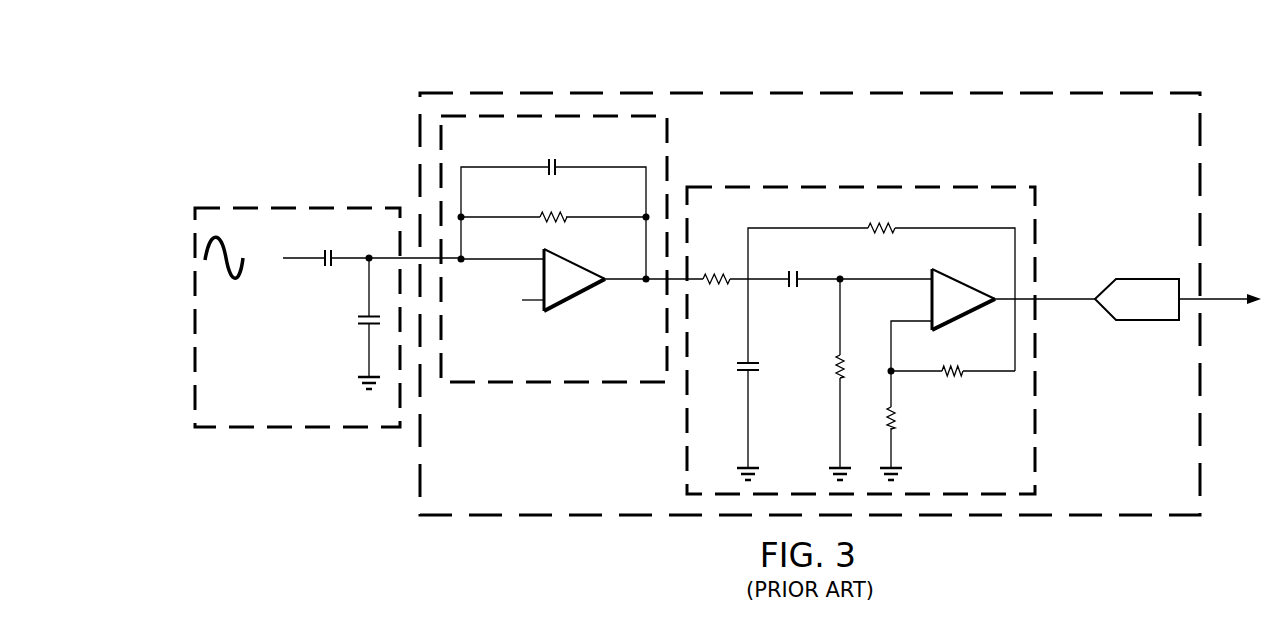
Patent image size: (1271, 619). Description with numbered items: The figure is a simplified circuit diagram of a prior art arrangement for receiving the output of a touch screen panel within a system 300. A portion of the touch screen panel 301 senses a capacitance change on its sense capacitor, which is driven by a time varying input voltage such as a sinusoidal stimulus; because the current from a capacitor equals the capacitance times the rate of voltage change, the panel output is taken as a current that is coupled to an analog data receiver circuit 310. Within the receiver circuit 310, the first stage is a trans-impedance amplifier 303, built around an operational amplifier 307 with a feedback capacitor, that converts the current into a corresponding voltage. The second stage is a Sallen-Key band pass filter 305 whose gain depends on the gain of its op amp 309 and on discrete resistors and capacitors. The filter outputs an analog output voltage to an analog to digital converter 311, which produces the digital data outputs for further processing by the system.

The system 300 is at (363, 78).
The touch screen panel 301 is at (289, 202).
The trans-impedance amplifier 303 is at (509, 390).
The band pass filter 305 is at (942, 178).
The first operational amplifier 307 is at (577, 297).
The op amp 309 is at (963, 283).
The analog data receiver circuit 310 is at (730, 88).
The analog to digital converter 311 is at (1147, 279).